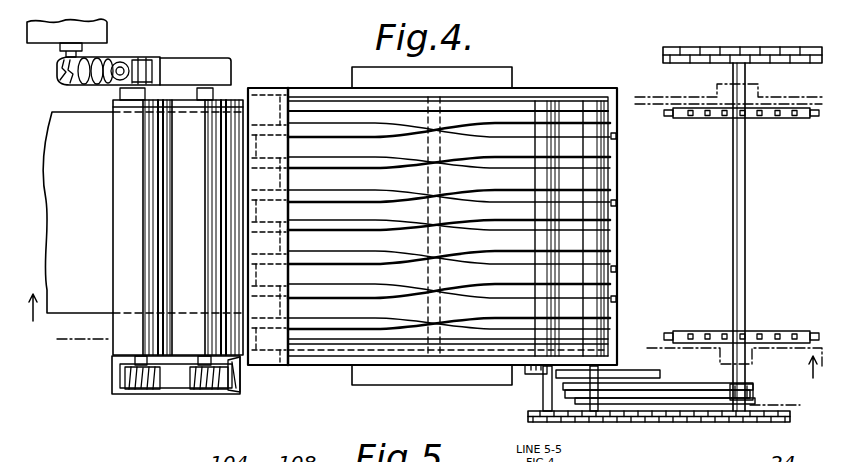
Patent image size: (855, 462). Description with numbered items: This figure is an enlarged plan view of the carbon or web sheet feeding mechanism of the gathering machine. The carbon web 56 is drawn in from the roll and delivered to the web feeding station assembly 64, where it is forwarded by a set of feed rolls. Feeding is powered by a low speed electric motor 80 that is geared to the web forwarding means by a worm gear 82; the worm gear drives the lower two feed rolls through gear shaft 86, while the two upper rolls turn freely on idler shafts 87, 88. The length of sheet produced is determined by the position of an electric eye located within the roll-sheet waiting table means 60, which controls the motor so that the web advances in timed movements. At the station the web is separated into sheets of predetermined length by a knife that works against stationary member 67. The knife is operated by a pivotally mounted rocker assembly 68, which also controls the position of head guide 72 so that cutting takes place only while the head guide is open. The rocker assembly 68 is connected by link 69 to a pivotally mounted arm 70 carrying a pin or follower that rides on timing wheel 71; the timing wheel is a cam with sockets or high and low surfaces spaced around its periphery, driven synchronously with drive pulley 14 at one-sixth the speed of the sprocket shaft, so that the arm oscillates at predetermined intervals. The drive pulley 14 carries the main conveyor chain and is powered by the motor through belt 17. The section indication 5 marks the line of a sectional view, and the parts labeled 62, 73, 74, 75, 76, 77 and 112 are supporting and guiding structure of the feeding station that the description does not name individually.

The section line 5-5 indication arrows 5 is at (803, 401).
The drive pulley 14 is at (790, 119).
The belt 17 is at (809, 46).
The web 56 is at (73, 300).
The roll-sheet waiting table means 60 is at (490, 308).
The bottom plate 62 is at (415, 375).
The web feeding station assembly 64 is at (579, 77).
The stationary member 67 is at (242, 87).
The rocker assembly 68 is at (338, 360).
The link 69 is at (534, 374).
The arm 70 is at (624, 371).
The timing wheel 71 is at (705, 386).
The head guide 72 is at (613, 269).
The floor 73 is at (753, 424).
The bar 74 is at (660, 423).
The support post 75 is at (546, 423).
The support post 76 is at (597, 423).
The twisted belts 77 is at (332, 160).
The electric motor 80 is at (107, 31).
The worm gear 82 is at (96, 57).
The gear shaft 86 is at (173, 384).
The idler shaft 87 is at (122, 338).
The idler shaft 88 is at (248, 381).
The guide rail 112 is at (588, 107).